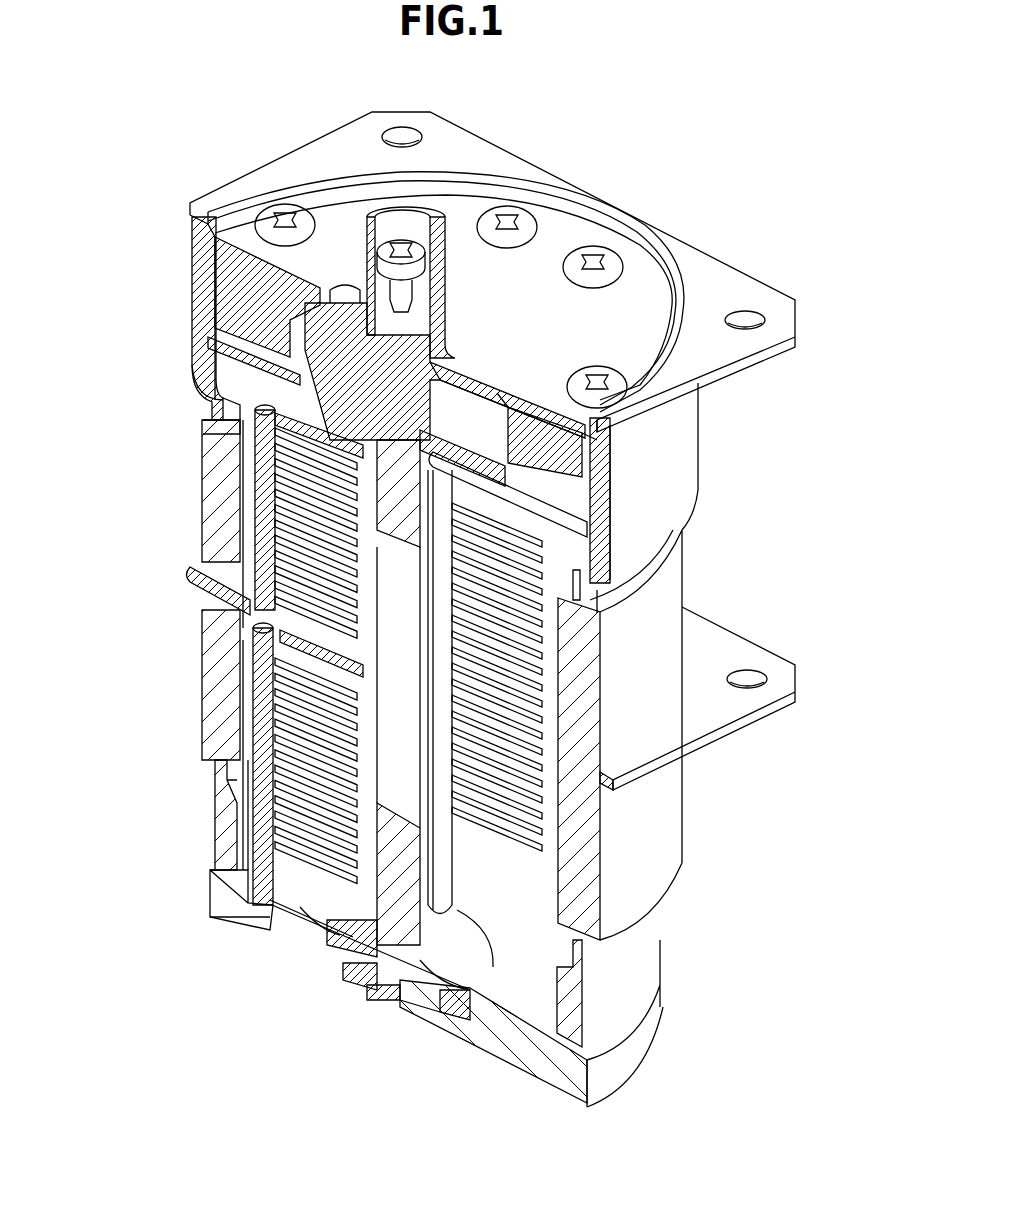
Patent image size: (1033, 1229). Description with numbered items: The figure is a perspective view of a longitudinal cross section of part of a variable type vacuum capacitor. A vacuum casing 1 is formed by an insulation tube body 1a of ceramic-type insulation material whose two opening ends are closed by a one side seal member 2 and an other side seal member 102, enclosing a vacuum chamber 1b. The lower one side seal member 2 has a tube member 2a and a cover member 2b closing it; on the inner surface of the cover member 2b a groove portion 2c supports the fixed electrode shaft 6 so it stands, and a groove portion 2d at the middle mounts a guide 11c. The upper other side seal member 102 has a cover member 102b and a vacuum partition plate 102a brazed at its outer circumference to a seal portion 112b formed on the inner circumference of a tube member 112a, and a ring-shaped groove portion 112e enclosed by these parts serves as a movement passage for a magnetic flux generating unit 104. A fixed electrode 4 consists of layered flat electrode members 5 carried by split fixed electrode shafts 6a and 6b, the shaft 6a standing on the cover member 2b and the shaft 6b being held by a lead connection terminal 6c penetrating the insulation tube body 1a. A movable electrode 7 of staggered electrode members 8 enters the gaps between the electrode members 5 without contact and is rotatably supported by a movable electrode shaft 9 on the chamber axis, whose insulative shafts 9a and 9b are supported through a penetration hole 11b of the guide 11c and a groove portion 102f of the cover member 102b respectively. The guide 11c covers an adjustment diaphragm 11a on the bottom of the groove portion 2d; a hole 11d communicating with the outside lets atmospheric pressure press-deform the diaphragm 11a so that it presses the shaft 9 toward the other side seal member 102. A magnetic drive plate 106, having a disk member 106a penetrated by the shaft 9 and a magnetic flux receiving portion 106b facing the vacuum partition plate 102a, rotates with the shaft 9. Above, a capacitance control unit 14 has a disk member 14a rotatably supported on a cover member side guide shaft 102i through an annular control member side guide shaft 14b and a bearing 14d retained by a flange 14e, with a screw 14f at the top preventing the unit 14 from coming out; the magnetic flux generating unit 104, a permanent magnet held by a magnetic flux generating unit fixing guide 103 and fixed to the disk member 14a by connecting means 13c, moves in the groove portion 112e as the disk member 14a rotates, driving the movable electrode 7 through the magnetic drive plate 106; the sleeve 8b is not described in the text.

The vacuum casing 1 is at (183, 486).
The insulation tube body 1a is at (665, 830).
The vacuum chamber 1b is at (553, 668).
The one side seal member 2 is at (742, 945).
The tube member 2a is at (640, 957).
The cover member 2b is at (650, 1025).
The groove portion 2c is at (318, 913).
The groove portion 2d is at (345, 945).
The fixed electrode 4 is at (128, 765).
The electrode members 5 is at (270, 832).
The fixed electrode shaft 6 is at (263, 865).
The fixed electrode shaft 6a is at (225, 660).
The fixed electrode shaft 6b is at (220, 535).
The lead connection terminal 6c is at (200, 585).
The movable electrode 7 is at (200, 968).
The electrode members 8 is at (290, 900).
The sleeve 8b is at (455, 900).
The movable electrode shaft 9 is at (557, 823).
The insulative shaft 9a is at (330, 925).
The insulative shaft 9b is at (237, 317).
The adjustment diaphragm 11a is at (395, 965).
The penetration hole 11b is at (440, 970).
The guide 11c is at (460, 1020).
The hole 11d is at (425, 1005).
The connecting means 13c is at (270, 228).
The capacitance control unit 14 is at (640, 292).
The disk member 14a is at (545, 245).
The control member side guide shaft 14b is at (410, 212).
The bearing 14d is at (400, 322).
The flange 14e is at (425, 292).
The screw 14f is at (490, 178).
The other side seal member 102 is at (556, 318).
The vacuum partition plate 102a is at (600, 520).
The cover member 102b is at (590, 452).
The groove portion 102f is at (460, 385).
The cover member side guide shaft 102i is at (455, 350).
The magnetic flux generating unit fixing guide 103 is at (203, 262).
The magnetic flux generating unit 104 is at (250, 275).
The magnetic drive plate 106 is at (120, 372).
The disk member 106a is at (215, 430).
The magnetic flux receiving portion 106b is at (210, 372).
The tube member 112a is at (680, 425).
The seal portion 112b is at (597, 553).
The groove portion 112e is at (212, 318).